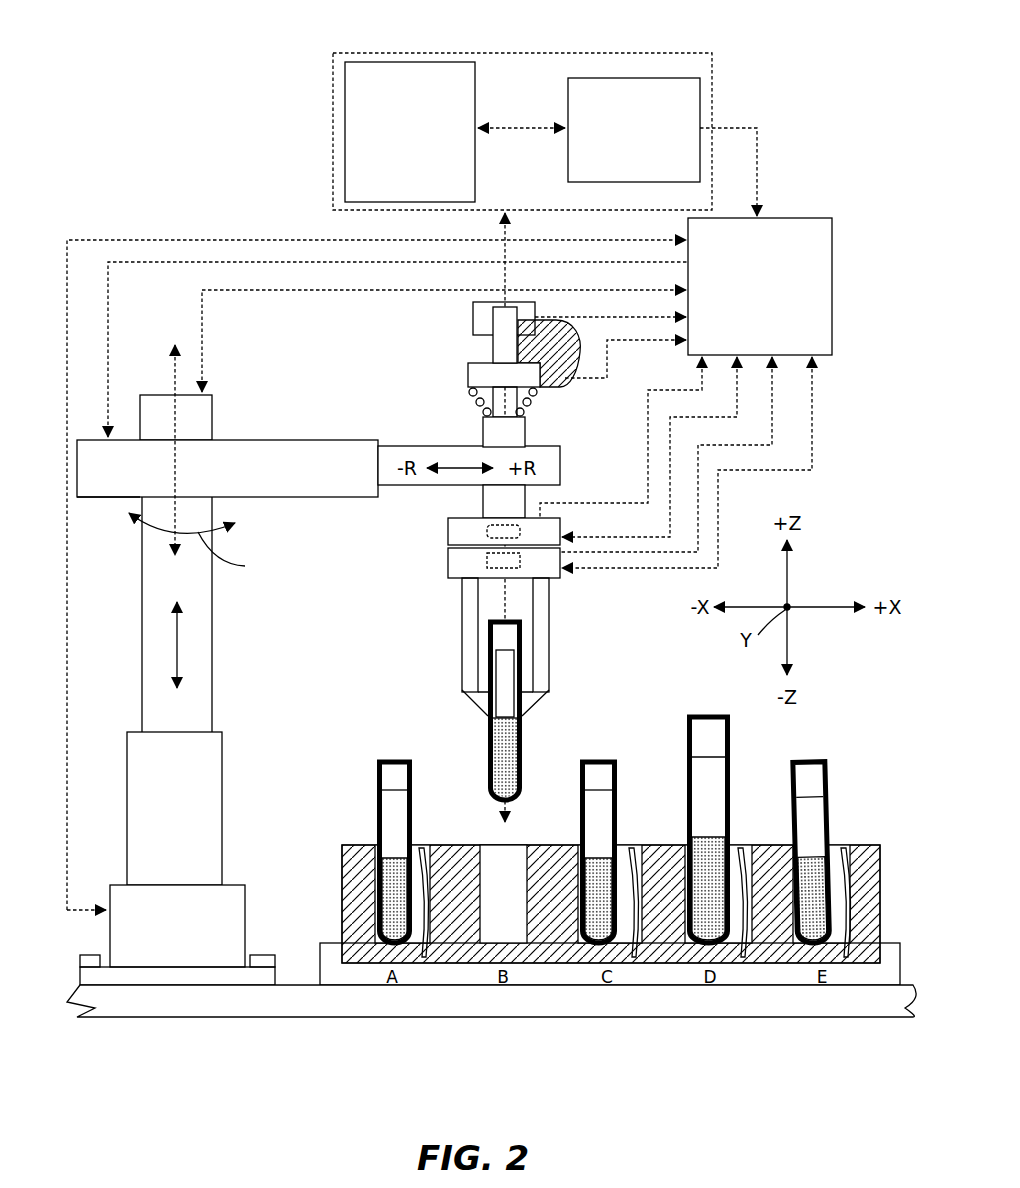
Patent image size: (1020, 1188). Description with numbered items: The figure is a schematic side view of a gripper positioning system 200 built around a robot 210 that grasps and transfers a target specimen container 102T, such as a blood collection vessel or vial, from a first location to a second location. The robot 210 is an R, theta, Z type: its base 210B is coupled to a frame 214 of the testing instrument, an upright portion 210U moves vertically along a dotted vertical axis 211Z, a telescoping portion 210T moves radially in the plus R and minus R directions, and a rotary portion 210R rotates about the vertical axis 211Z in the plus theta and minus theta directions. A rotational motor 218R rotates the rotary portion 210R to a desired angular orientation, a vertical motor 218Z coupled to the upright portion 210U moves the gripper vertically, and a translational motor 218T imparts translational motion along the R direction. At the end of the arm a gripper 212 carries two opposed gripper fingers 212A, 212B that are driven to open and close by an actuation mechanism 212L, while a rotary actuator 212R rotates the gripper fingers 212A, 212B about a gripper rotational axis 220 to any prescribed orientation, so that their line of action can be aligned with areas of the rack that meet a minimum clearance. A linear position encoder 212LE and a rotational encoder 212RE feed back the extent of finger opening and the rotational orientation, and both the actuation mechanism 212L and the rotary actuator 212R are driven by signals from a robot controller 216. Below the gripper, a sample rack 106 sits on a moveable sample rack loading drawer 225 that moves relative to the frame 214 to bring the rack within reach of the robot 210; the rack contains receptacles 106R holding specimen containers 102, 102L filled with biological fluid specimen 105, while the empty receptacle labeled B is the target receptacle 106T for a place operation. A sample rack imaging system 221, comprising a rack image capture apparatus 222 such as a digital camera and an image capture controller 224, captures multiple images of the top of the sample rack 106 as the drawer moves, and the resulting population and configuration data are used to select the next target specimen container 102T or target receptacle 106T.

The gripper positioning system 200 is at (285, 145).
The robot 210 is at (207, 218).
The sample rack imaging system 221 is at (555, 112).
The rack image capture apparatus 222 is at (477, 92).
The image capture controller 224 is at (700, 93).
The robot controller 216 is at (782, 218).
The vertical axis 211Z is at (172, 386).
The rotational motor 218R is at (210, 392).
The rotary portion 210R is at (280, 440).
The telescoping portion 210T is at (400, 486).
The translational motor 218T is at (96, 498).
The upright portion 210U is at (212, 665).
The vertical motor 218Z is at (110, 938).
The base 210B is at (80, 984).
The frame 214 is at (287, 1018).
The moveable sample rack loading drawer 225 is at (697, 986).
The gripper rotational axis 220 is at (482, 430).
The gripper 212 is at (499, 628).
The rotary actuator 212R is at (498, 512).
The actuation mechanism 212L is at (461, 597).
The rotational encoder 212RE is at (522, 523).
The linear position encoder 212LE is at (487, 570).
The gripper finger 212A is at (462, 660).
The gripper finger 212B is at (549, 680).
The target specimen container 102T is at (516, 711).
The biological fluid specimen 105 is at (497, 683).
The sample rack 106 is at (594, 808).
The receptacle 106R is at (428, 870).
The target receptacle 106T is at (540, 868).
The specimen container 102 is at (378, 762).
The specimen container 102L is at (700, 717).